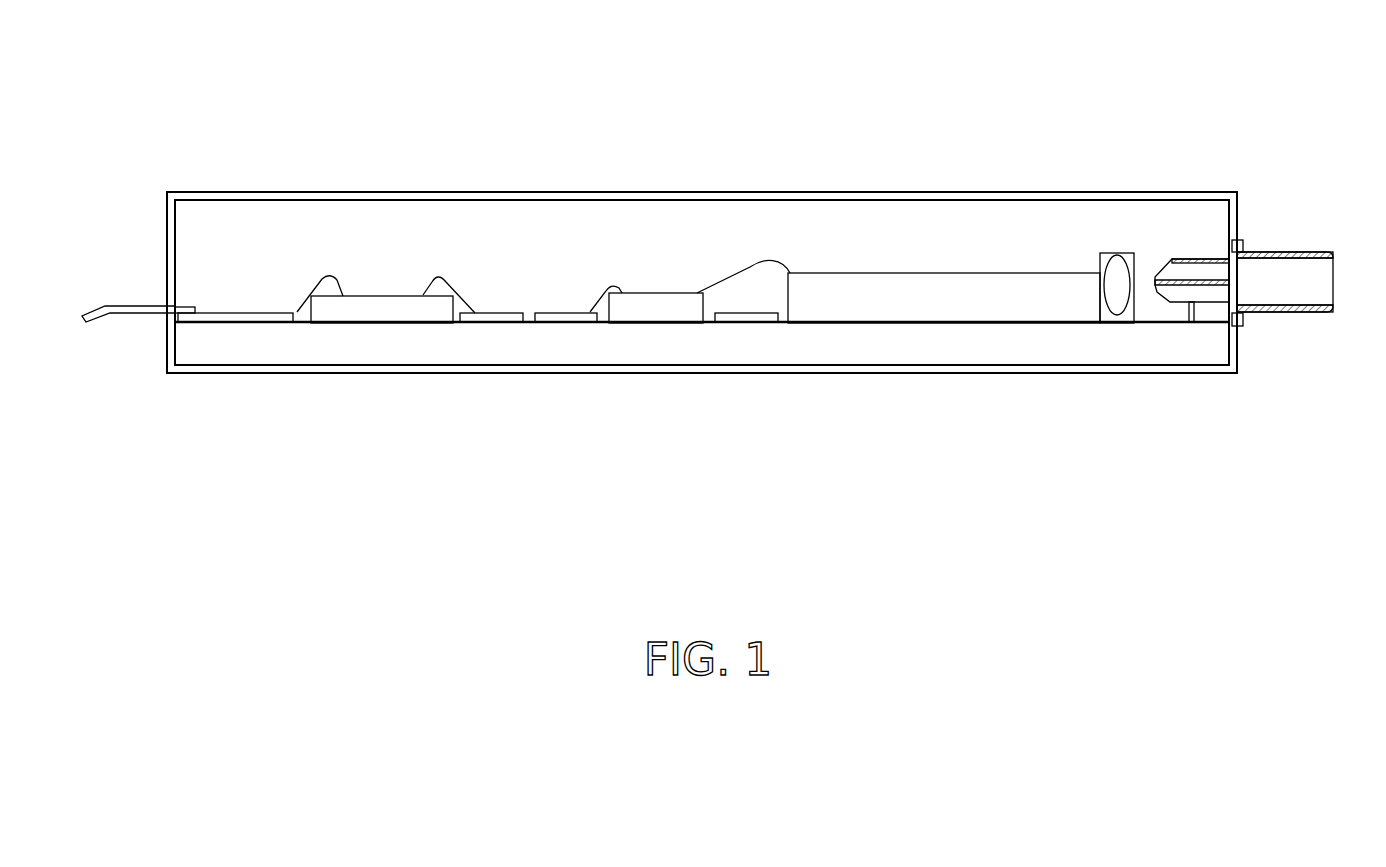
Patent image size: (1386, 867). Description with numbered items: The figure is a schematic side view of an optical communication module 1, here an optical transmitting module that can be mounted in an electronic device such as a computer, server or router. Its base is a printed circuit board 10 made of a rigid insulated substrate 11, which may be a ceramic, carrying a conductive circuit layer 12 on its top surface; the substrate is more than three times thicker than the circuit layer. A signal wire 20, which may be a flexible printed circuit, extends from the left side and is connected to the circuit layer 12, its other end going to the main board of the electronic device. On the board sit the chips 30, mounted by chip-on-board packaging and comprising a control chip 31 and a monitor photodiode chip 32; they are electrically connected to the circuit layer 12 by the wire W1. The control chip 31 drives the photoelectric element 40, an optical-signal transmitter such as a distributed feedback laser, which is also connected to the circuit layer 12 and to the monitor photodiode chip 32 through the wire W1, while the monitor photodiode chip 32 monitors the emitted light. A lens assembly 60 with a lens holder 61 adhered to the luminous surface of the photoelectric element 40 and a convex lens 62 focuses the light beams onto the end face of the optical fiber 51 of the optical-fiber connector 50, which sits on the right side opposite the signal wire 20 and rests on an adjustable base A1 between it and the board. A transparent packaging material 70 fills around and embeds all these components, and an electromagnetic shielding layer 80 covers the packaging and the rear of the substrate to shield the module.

The optical communication module 1 is at (1241, 100).
The printed circuit board 10 is at (702, 431).
The insulated substrate 11 is at (618, 352).
The circuit layer 12 is at (565, 322).
The signal wire 20 is at (130, 305).
The chips 30 is at (507, 196).
The control chip 31 is at (387, 300).
The monitor photodiode chip 32 is at (665, 300).
The photoelectric element 40 is at (930, 300).
The optical-fiber connector 50 is at (1280, 251).
The optical fiber 51 is at (1173, 262).
The lens assembly 60 is at (1053, 195).
The lens holder 61 is at (1103, 258).
The lens 62 is at (1118, 255).
The transparent packaging material 70 is at (820, 250).
The electromagnetic shielding layer 80 is at (170, 232).
The adjustable base A1 is at (1212, 308).
The wire W1 is at (315, 282).